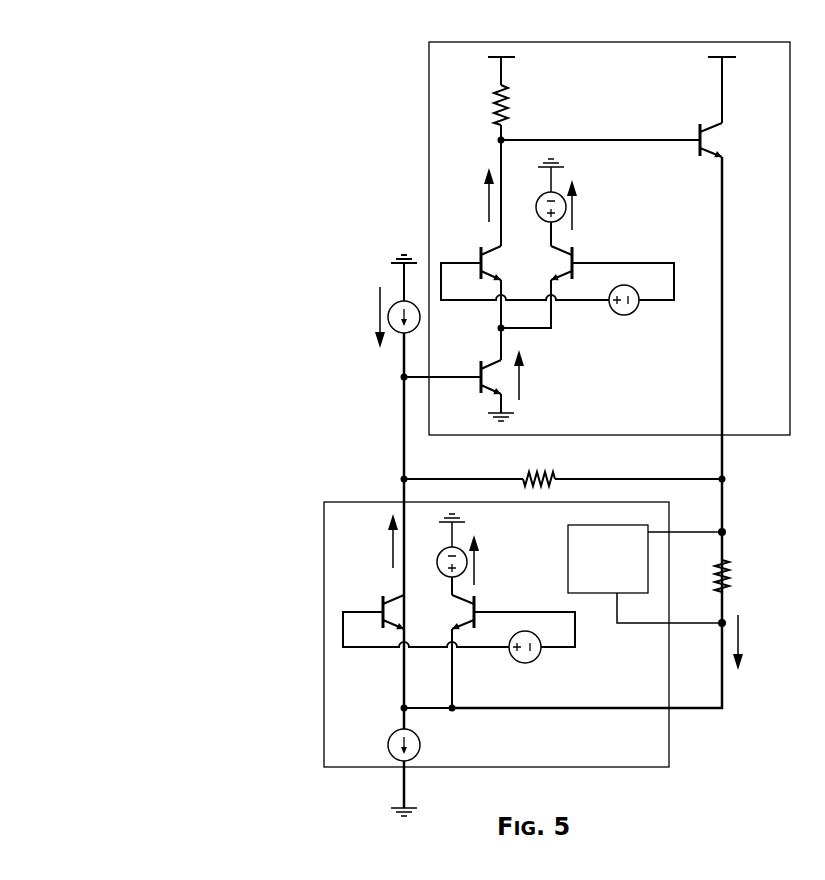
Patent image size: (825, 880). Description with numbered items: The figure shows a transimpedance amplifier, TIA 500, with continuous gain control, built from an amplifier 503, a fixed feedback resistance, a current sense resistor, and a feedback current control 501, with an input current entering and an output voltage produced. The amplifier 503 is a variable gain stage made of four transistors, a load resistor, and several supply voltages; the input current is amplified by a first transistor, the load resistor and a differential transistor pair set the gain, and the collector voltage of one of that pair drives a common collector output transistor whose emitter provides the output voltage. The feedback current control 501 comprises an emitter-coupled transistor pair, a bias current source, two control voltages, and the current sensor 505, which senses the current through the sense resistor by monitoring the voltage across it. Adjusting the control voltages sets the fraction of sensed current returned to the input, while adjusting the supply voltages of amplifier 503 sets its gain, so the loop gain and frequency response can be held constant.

The TIA 500 is at (152, 146).
The feedback current control 501 is at (564, 754).
The amplifier 503 is at (645, 83).
The current sensor 505 is at (625, 586).